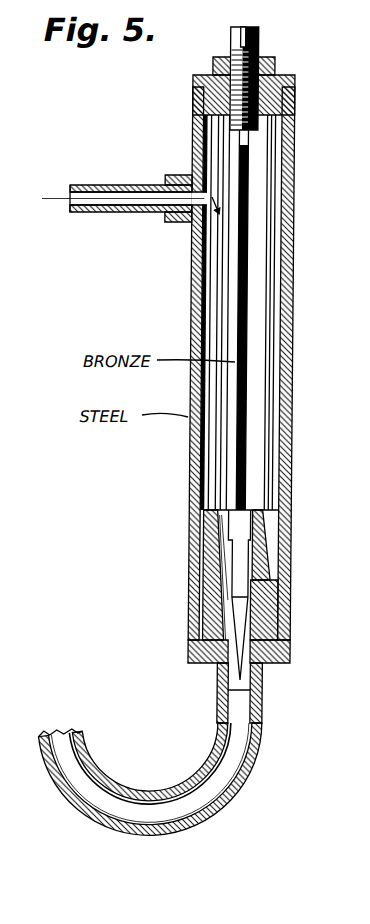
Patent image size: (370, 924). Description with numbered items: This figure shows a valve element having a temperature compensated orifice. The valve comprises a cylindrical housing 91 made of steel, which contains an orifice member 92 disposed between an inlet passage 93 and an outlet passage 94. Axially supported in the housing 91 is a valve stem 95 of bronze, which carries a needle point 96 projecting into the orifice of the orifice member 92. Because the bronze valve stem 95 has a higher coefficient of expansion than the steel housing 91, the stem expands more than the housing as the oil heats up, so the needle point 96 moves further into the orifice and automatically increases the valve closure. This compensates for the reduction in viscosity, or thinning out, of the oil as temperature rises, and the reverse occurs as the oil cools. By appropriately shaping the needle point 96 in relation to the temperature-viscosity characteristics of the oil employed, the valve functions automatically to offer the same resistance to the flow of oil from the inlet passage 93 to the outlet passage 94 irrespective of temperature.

The cylindrical housing 91 is at (194, 476).
The orifice member 92 is at (275, 620).
The inlet passage 93 is at (98, 185).
The outlet passage 94 is at (154, 835).
The valve stem 95 is at (240, 283).
The needle point 96 is at (237, 625).